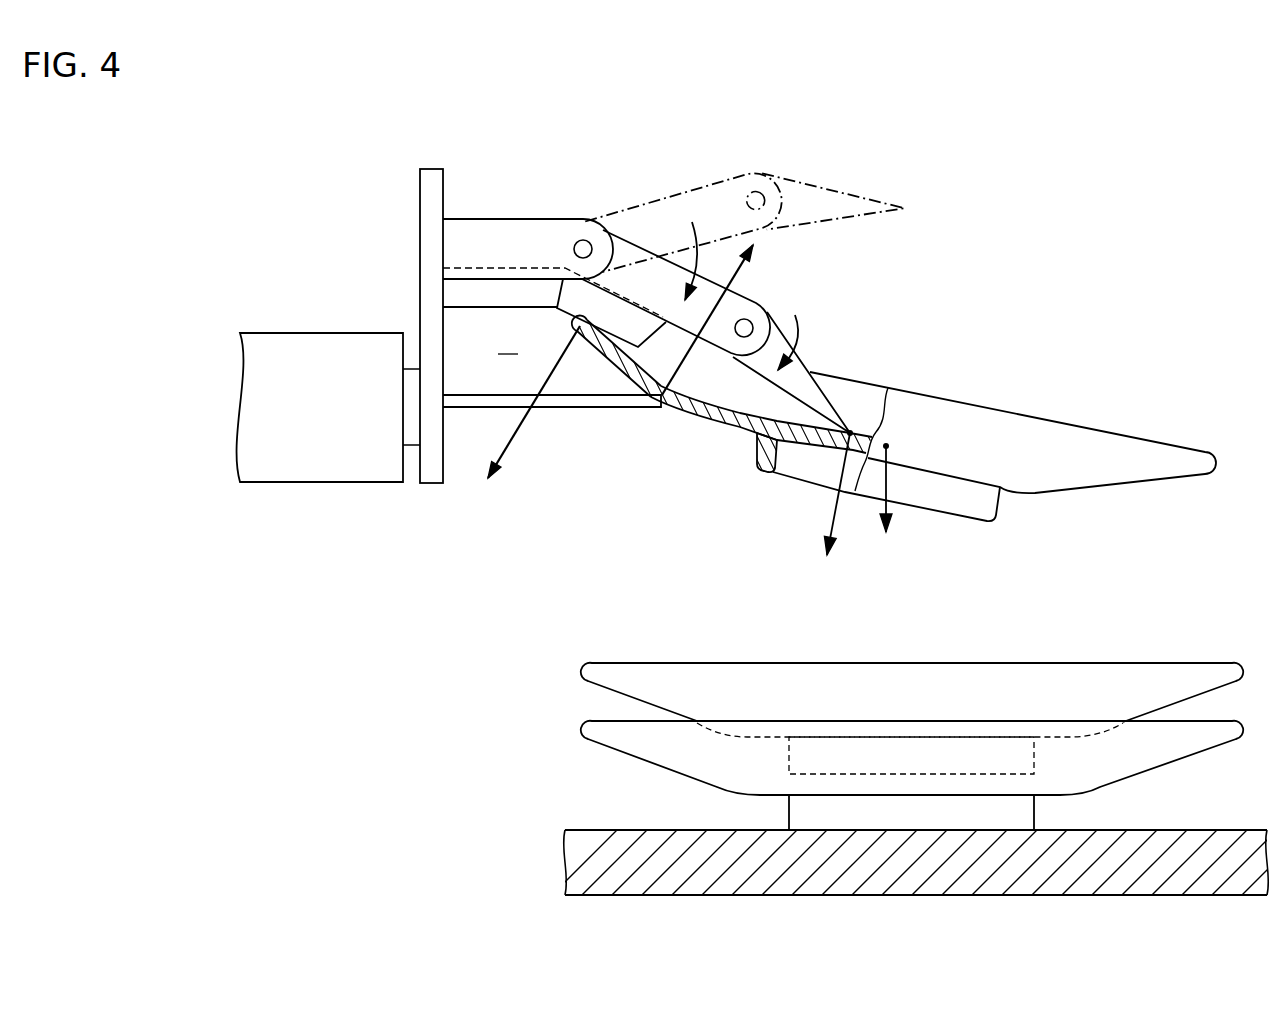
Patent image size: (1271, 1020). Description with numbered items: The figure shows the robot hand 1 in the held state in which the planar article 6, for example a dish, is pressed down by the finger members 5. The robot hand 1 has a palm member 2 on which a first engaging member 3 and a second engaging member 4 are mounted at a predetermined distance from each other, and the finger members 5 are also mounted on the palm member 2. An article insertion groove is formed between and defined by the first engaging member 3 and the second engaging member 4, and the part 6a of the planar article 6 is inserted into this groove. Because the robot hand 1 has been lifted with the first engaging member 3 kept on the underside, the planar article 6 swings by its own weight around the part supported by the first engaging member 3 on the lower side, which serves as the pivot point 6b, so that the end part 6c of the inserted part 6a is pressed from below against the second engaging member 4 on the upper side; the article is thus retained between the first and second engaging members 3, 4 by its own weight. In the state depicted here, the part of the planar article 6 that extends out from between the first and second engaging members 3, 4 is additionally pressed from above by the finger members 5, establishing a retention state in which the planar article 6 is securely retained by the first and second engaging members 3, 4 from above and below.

The robot hand 1 is at (372, 193).
The palm member 2 is at (419, 262).
The first engaging member 3 is at (497, 399).
The second engaging member 4 is at (516, 292).
The finger members 5 is at (652, 198).
The planar article 6 is at (1083, 428).
The part of the planar article 6a is at (613, 355).
The pivot point 6b is at (667, 402).
The end part 6c is at (592, 315).